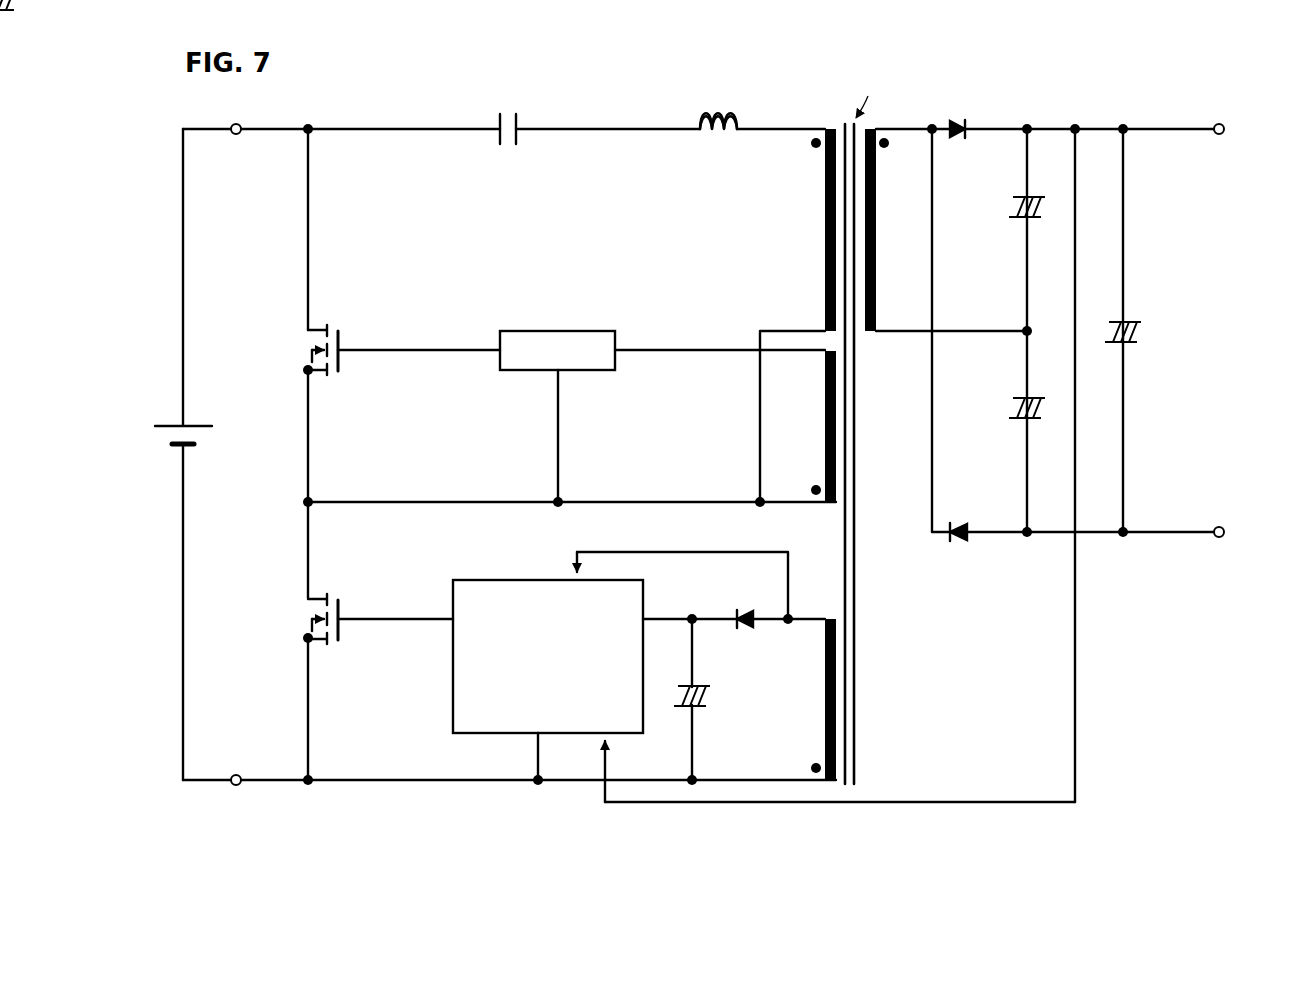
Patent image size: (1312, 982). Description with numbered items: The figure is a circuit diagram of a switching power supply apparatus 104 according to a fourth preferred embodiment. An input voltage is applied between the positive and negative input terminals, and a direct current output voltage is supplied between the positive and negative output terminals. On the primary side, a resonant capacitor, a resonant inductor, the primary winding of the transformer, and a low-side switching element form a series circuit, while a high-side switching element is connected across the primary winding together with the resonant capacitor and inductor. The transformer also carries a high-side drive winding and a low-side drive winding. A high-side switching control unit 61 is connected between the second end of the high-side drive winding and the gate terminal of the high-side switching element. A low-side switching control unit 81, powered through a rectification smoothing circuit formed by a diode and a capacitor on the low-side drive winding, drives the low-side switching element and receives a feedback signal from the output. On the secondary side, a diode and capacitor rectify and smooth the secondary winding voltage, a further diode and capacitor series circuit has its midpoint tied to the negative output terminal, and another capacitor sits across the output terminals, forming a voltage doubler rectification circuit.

The switching power supply apparatus 104 is at (1178, 92).
The high-side switching control unit 61 is at (588, 331).
The low-side switching control unit 81 is at (453, 724).